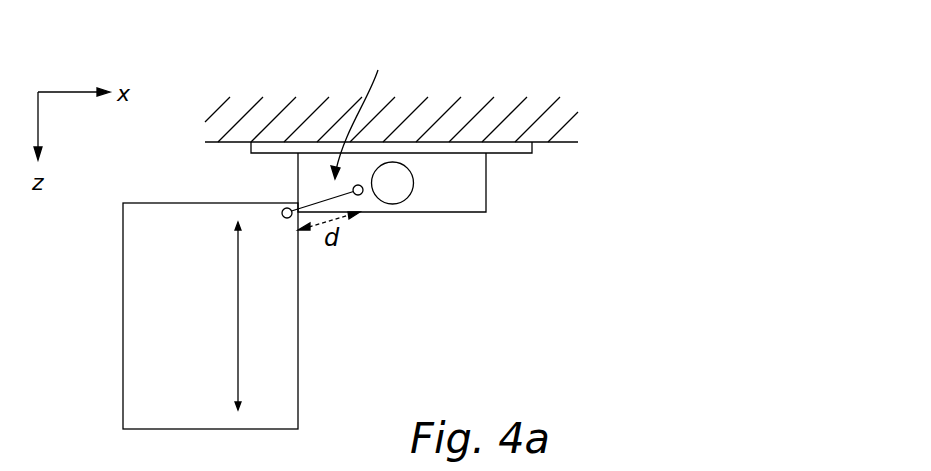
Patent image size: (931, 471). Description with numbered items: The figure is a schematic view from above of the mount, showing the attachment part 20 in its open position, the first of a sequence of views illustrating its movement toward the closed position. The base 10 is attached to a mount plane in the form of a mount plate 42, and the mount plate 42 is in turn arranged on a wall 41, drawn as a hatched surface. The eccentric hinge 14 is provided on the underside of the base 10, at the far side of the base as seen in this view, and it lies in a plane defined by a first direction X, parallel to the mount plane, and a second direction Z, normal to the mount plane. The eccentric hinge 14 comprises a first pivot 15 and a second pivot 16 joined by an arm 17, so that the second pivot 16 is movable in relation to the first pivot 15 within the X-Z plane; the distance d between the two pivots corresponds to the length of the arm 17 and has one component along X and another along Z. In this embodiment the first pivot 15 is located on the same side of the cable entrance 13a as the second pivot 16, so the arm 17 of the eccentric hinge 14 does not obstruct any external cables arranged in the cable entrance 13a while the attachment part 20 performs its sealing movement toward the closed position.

The base 10 is at (488, 180).
The cable entrance 13a is at (398, 187).
The eccentric hinge 14 is at (363, 111).
The first pivot 15 is at (360, 196).
The second pivot 16 is at (285, 218).
The arm 17 is at (315, 202).
The attachment part 20 is at (152, 205).
The wall 41 is at (540, 115).
The mount plate 42 is at (472, 145).